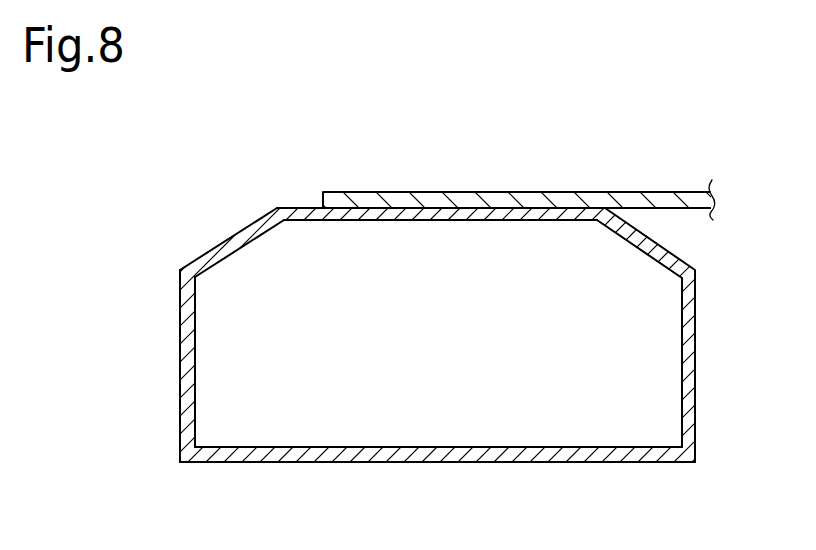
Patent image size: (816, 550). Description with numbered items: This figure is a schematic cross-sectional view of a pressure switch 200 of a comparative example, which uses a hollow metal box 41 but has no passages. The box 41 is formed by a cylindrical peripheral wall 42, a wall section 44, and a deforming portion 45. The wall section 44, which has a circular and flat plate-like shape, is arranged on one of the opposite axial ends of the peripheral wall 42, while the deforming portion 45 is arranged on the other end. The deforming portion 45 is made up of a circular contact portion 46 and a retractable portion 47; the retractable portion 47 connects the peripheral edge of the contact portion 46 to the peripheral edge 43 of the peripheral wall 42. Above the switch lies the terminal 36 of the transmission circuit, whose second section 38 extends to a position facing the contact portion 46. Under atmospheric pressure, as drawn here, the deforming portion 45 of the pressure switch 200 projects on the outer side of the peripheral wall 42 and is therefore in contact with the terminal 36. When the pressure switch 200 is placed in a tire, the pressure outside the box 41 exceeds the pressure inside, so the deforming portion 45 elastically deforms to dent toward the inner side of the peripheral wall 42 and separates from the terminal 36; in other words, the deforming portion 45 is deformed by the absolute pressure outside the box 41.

The pressure switch 200 is at (408, 349).
The terminal 36 is at (650, 193).
The second section 38 is at (560, 201).
The box 41 is at (180, 380).
The peripheral wall 42 is at (193, 420).
The peripheral edge 43 is at (679, 279).
The wall section 44 is at (449, 450).
The deforming portion 45 is at (392, 283).
The contact portion 46 is at (320, 212).
The retractable portion 47 is at (244, 237).